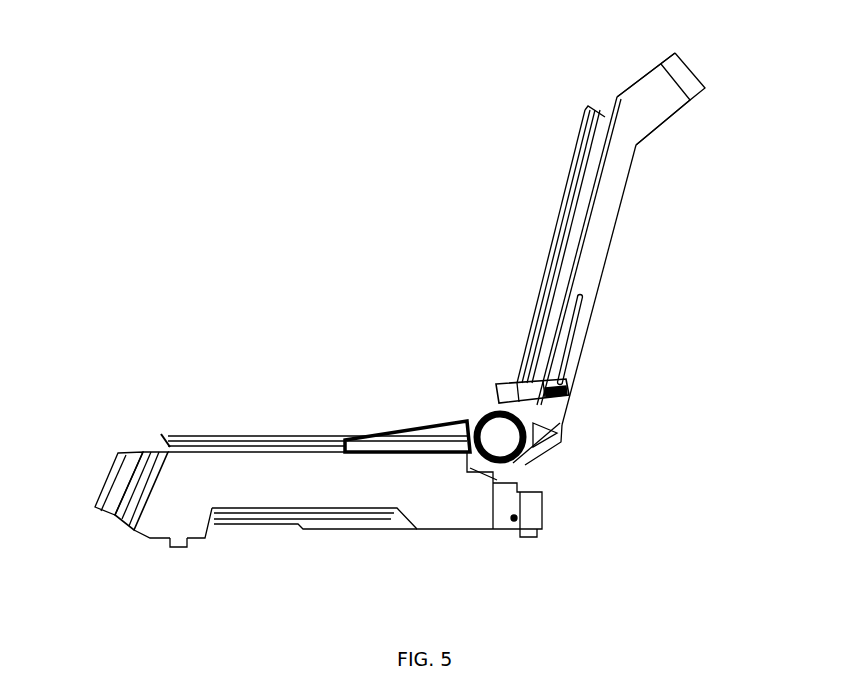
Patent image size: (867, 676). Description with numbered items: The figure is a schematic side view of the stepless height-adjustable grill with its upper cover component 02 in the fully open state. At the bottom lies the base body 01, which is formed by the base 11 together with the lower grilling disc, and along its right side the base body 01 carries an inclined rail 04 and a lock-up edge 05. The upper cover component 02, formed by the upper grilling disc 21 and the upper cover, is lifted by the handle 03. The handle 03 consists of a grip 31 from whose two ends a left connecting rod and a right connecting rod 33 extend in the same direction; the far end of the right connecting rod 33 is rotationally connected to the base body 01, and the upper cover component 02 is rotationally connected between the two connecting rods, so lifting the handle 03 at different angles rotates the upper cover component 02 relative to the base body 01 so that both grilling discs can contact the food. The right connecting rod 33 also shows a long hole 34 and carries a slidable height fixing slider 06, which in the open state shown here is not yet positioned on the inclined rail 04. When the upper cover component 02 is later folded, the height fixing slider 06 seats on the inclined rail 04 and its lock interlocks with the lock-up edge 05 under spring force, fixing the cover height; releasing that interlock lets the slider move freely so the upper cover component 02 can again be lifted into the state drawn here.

The base body 01 is at (308, 471).
The upper cover component 02 is at (606, 237).
The handle 03 is at (689, 118).
The inclined rail 04 is at (396, 405).
The lock-up edge 05 is at (454, 404).
The height fixing slider 06 is at (570, 394).
The base 11 is at (352, 537).
The upper grilling disc 21 is at (533, 244).
The grip 31 is at (705, 54).
The right connecting rod 33 is at (598, 258).
The long hole 34 is at (587, 344).